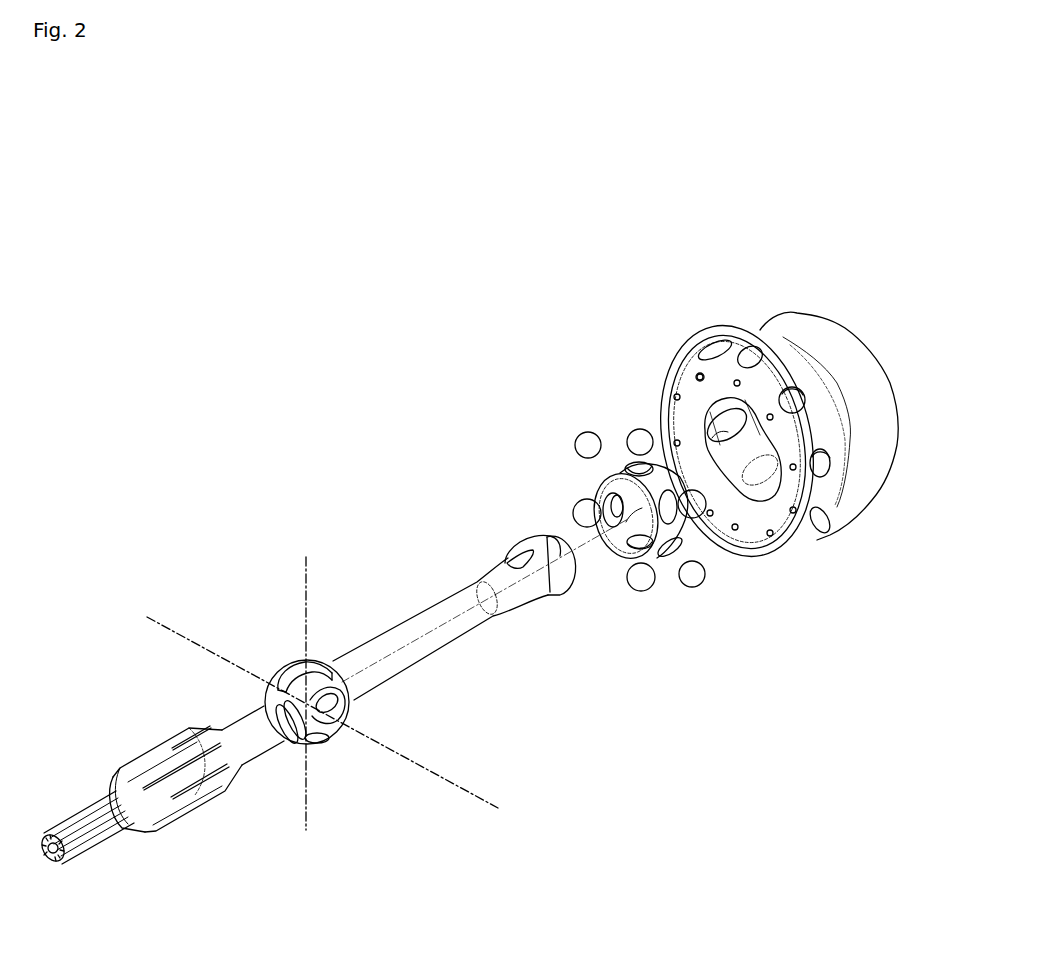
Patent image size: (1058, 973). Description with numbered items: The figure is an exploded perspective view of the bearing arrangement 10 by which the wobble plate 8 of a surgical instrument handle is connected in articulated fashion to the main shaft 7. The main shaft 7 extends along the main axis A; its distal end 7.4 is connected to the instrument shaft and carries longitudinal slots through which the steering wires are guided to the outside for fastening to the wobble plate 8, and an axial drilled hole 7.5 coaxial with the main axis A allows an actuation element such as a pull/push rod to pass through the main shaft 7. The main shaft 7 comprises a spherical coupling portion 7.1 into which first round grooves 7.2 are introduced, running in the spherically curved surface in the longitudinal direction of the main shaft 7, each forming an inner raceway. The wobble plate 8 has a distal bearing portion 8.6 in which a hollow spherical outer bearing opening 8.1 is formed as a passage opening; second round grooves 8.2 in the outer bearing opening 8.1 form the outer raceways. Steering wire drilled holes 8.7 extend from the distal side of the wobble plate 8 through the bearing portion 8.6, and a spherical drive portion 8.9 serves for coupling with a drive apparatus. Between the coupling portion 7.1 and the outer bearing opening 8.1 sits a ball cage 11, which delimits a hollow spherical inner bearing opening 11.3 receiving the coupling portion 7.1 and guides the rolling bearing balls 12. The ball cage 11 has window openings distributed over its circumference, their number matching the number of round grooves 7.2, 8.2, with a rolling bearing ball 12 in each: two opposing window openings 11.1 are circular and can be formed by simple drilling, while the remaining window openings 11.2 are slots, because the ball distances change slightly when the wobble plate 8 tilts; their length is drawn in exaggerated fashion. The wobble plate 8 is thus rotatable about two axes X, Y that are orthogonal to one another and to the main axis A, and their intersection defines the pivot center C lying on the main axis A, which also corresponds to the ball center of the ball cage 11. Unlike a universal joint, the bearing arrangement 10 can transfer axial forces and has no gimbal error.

The bearing arrangement 10 is at (250, 276).
The main shaft 7 is at (386, 692).
The spherical coupling portion 7.1 is at (278, 683).
The first round grooves 7.2 is at (313, 670).
The distal end of the main shaft 7.4 is at (118, 830).
The axial drilled hole 7.5 is at (65, 858).
The wobble plate 8 is at (801, 560).
The outer bearing opening 8.1 is at (740, 413).
The second round grooves 8.2 is at (723, 441).
The distal bearing portion 8.6 is at (838, 522).
The steering wire drilled holes 8.7 is at (703, 380).
The spherical drive portion 8.9 is at (882, 460).
The ball cage 11 is at (659, 575).
The circular window openings 11.1 is at (626, 466).
The slot-shaped window openings 11.2 is at (615, 500).
The inner bearing opening 11.3 is at (638, 517).
The rolling bearing balls 12 is at (585, 447).
The main axis A is at (452, 620).
The pivot center C is at (313, 722).
The axis X is at (487, 803).
The axis Y is at (309, 820).